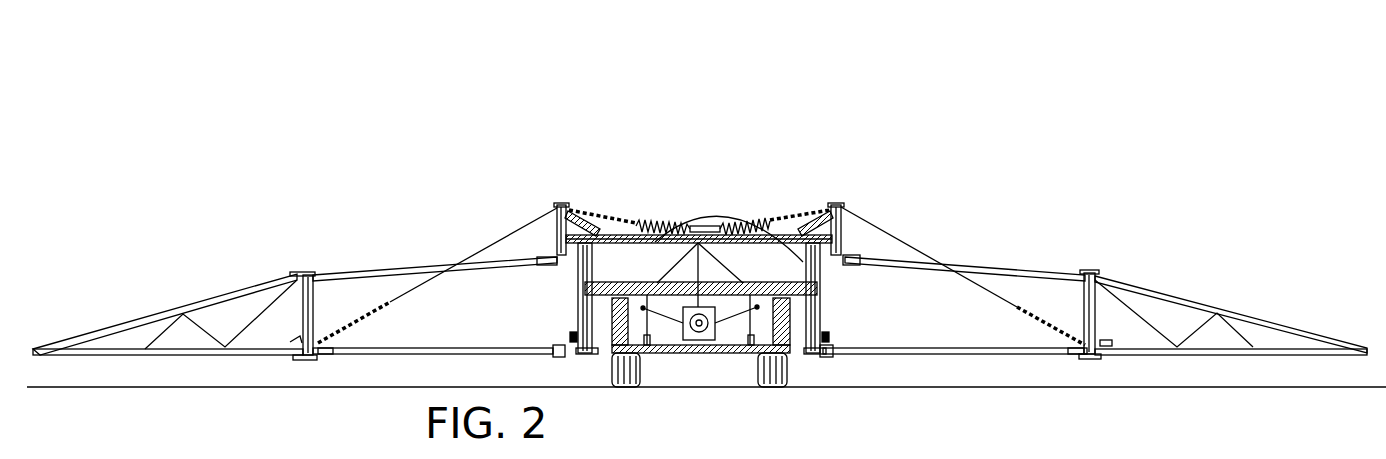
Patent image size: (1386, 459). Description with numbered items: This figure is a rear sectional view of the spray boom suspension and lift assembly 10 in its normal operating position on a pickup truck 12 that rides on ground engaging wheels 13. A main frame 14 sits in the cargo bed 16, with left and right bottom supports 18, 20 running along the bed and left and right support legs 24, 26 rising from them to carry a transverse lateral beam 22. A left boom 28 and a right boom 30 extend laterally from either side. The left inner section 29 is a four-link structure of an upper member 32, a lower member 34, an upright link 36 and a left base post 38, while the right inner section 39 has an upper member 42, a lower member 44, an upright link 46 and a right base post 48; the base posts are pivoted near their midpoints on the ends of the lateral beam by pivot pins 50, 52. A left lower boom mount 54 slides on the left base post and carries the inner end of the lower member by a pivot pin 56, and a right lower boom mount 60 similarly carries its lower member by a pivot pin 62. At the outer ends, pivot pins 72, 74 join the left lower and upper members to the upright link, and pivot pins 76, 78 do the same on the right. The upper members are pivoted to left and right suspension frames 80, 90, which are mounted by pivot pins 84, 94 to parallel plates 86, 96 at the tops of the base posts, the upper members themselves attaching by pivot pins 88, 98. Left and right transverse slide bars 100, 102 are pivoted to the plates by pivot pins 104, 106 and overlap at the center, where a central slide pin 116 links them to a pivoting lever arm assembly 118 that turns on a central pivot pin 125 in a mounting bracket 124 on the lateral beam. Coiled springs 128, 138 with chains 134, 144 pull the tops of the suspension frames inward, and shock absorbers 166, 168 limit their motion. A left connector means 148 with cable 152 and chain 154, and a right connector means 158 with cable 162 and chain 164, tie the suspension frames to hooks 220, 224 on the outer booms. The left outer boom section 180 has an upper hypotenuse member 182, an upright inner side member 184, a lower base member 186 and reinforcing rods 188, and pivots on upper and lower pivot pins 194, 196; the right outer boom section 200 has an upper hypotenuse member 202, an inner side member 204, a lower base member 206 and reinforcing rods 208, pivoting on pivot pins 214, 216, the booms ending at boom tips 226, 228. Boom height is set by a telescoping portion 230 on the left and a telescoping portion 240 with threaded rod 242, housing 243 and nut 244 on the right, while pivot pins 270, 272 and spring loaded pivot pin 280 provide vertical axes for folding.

The spray boom suspension and lift assembly 10 is at (820, 148).
The pickup truck 12 is at (700, 358).
The ground engaging wheels 13 is at (634, 388).
The main frame 14 is at (612, 288).
The cargo bed 16 is at (622, 332).
The left bottom support 18 is at (648, 355).
The right bottom support 20 is at (752, 355).
The lateral beam 22 is at (752, 309).
The left support leg 24 is at (628, 330).
The right support leg 26 is at (748, 325).
The left boom 28 is at (345, 210).
The left inner section 29 is at (398, 267).
The right boom 30 is at (1082, 216).
The upper member 32 is at (424, 262).
The lower member 34 is at (465, 355).
The upright link 36 is at (316, 297).
The left base post 38 is at (573, 358).
The right inner section 39 is at (1045, 266).
The upper member 42 is at (987, 268).
The lower member 44 is at (970, 356).
The upright link 46 is at (1083, 297).
The right base post 48 is at (813, 325).
The pivot pin 50 is at (580, 303).
The pivot pin 52 is at (817, 290).
The left lower boom mount 54 is at (568, 338).
The pivot pin 56 is at (556, 357).
The right lower boom mount 60 is at (836, 338).
The pivot pin 62 is at (845, 357).
The pivot pin 72 is at (316, 360).
The pivot pin 74 is at (309, 272).
The pivot pin 76 is at (1084, 357).
The pivot pin 78 is at (1081, 272).
The left suspension frame 80 is at (556, 220).
The pivot pin 84 is at (556, 228).
The parallel plates 86 is at (593, 270).
The pivot pin 88 is at (565, 218).
The right suspension frame 90 is at (845, 228).
The pivot pin 94 is at (850, 250).
The parallel plates 96 is at (806, 258).
The pivot pin 98 is at (853, 252).
The left transverse slide bar 100 is at (628, 236).
The right transverse slide bar 102 is at (780, 235).
The pivot pin 104 is at (615, 222).
The pivot pin 106 is at (798, 235).
The central slide pin 116 is at (705, 263).
The pivoting lever arm assembly 118 is at (695, 305).
The mounting bracket 124 is at (770, 234).
The central pivot pin 125 is at (697, 262).
The coiled spring 128 is at (657, 228).
The chain 134 is at (578, 210).
The coiled spring 138 is at (727, 225).
The chain 144 is at (822, 214).
The left connector means 148 is at (466, 252).
The cable 152 is at (432, 281).
The chain 154 is at (363, 316).
The right connector means 158 is at (935, 258).
The cable 162 is at (981, 294).
The chain 164 is at (1040, 318).
The left shock absorber 166 is at (596, 208).
The right shock absorber 168 is at (850, 252).
The left outer boom section 180 is at (224, 294).
The upper hypotenuse member 182 is at (131, 324).
The upright inner side member 184 is at (296, 312).
The lower base member 186 is at (234, 350).
The reinforcing rods 188 is at (202, 333).
The upper pivot pin 194 is at (300, 273).
The lower pivot pin 196 is at (302, 357).
The right outer boom section 200 is at (1214, 296).
The upper hypotenuse member 202 is at (1245, 334).
The upper inner side member 204 is at (1127, 302).
The lower base member 206 is at (1195, 357).
The reinforcing rods 208 is at (1175, 342).
The upper pivot pin 214 is at (1099, 273).
The lower pivot pin 216 is at (1100, 360).
The hook 220 is at (279, 329).
The hook 224 is at (1106, 344).
The left boom tip 226 is at (37, 356).
The right boom tip 228 is at (1365, 355).
The telescoping portion 230 is at (545, 265).
The telescoping portion 240 is at (856, 268).
The threaded rod 242 is at (868, 262).
The housing 243 is at (862, 267).
The nut 244 is at (866, 264).
The pivot pin 270 is at (562, 258).
The pivot pin 272 is at (840, 262).
The spring loaded pivot pin 280 is at (828, 362).